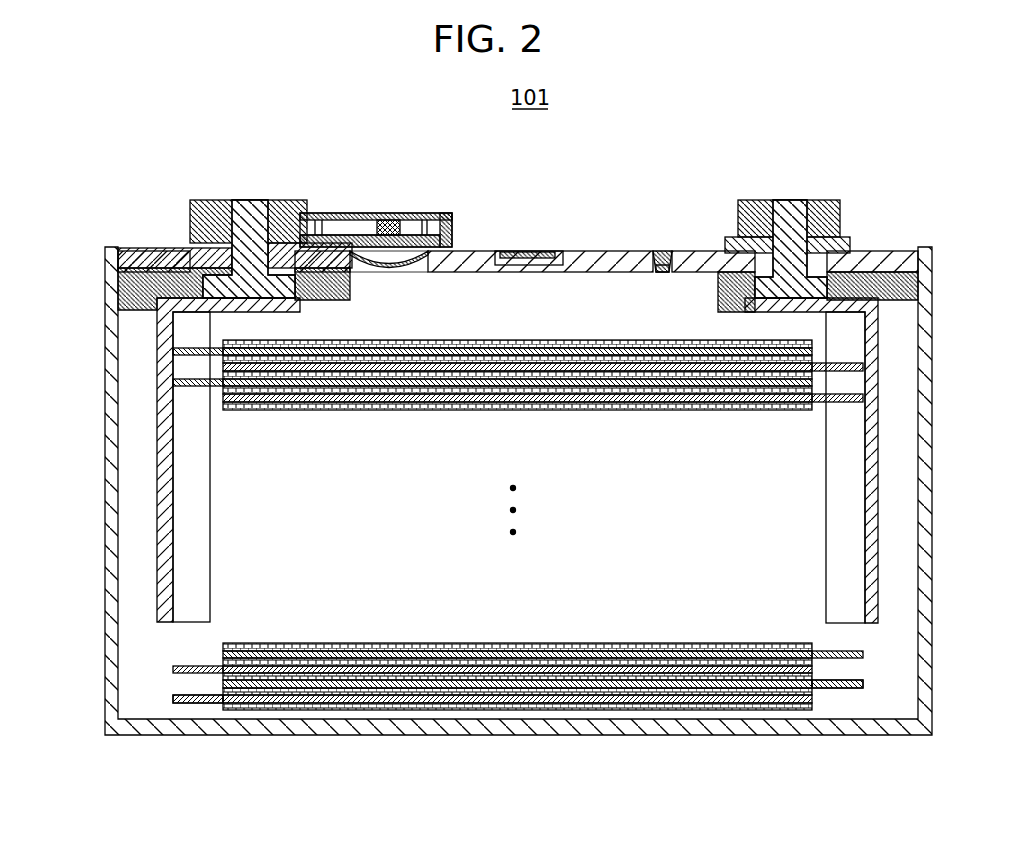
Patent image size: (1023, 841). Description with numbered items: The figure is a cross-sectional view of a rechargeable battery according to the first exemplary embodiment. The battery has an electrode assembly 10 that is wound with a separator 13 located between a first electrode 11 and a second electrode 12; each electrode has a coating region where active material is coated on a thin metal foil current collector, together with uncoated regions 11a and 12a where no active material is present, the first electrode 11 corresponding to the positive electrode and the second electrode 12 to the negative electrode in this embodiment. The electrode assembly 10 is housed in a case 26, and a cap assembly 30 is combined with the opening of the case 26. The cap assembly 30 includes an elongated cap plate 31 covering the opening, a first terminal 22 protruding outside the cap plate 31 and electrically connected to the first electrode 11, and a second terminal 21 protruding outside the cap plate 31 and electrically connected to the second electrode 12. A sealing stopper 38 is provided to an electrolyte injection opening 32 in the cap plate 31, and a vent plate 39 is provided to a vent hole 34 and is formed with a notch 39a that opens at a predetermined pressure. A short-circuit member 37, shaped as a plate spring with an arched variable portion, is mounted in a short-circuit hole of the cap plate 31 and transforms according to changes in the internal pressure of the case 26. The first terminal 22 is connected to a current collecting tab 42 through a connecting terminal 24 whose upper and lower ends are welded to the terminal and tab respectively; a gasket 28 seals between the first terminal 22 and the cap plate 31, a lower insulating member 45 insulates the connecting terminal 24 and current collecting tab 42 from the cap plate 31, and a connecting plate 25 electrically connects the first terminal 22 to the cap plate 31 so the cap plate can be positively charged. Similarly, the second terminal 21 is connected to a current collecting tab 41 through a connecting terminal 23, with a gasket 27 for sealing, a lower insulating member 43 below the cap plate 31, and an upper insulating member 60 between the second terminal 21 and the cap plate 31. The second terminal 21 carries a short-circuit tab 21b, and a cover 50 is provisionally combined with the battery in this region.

The electrode assembly 10 is at (517, 567).
The first electrode 11 is at (713, 710).
The uncoated region 11a is at (843, 690).
The second electrode 12 is at (320, 703).
The uncoated region 12a is at (195, 703).
The separator 13 is at (522, 677).
The second terminal 21 is at (290, 210).
The short-circuit tab 21b is at (341, 246).
The first terminal 22 is at (757, 205).
The connecting terminal 23 is at (255, 200).
The connecting terminal 24 is at (790, 205).
The connecting plate 25 is at (850, 245).
The case 26 is at (925, 534).
The gasket 27 is at (170, 249).
The gasket 28 is at (705, 251).
The cap assembly 30 is at (533, 211).
The cap plate 31 is at (895, 262).
The electrolyte injection opening 32 is at (662, 272).
The vent hole 34 is at (538, 254).
The short-circuit member 37 is at (397, 266).
The sealing stopper 38 is at (657, 259).
The vent plate 39 is at (548, 251).
The notch 39a is at (517, 251).
The current collecting tab 41 is at (165, 410).
The current collecting tab 42 is at (873, 440).
The lower insulating member 43 is at (130, 287).
The lower insulating member 45 is at (905, 290).
The cover 50 is at (385, 214).
The upper insulating member 60 is at (377, 196).